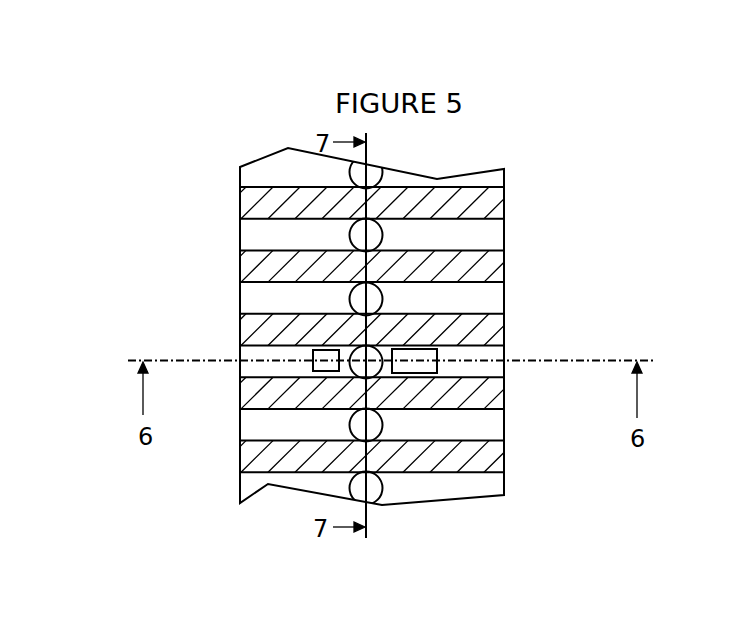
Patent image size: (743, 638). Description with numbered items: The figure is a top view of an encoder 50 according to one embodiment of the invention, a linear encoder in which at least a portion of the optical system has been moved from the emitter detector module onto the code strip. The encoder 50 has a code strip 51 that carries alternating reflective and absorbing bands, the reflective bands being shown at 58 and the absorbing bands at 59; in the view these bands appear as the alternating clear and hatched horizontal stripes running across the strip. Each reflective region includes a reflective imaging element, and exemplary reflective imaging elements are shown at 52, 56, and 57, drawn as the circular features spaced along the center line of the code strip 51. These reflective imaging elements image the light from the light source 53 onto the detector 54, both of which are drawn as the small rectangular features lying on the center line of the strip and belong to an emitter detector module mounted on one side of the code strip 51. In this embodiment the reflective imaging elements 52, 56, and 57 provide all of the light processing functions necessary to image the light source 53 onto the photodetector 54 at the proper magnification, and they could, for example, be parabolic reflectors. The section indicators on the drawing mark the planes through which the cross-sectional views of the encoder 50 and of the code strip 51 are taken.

The encoder 50 is at (390, 304).
The code strip 51 is at (505, 418).
The reflective imaging element 52 is at (358, 366).
The light source 53 is at (313, 360).
The detector 54 is at (437, 362).
The reflective imaging element 56 is at (369, 298).
The reflective imaging element 57 is at (360, 428).
The reflective band 58 is at (495, 238).
The absorbing band 59 is at (493, 203).